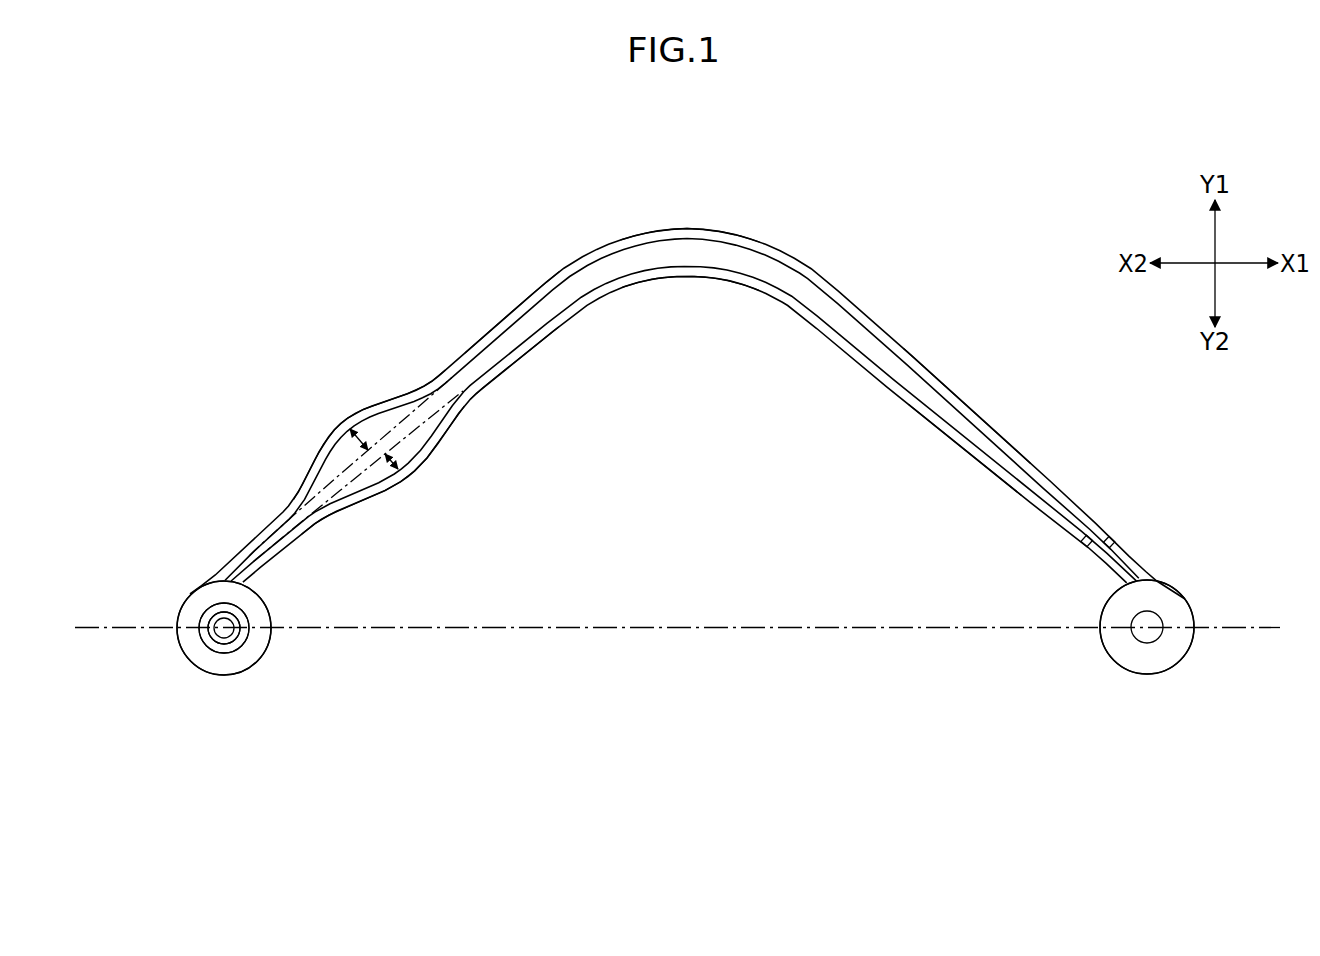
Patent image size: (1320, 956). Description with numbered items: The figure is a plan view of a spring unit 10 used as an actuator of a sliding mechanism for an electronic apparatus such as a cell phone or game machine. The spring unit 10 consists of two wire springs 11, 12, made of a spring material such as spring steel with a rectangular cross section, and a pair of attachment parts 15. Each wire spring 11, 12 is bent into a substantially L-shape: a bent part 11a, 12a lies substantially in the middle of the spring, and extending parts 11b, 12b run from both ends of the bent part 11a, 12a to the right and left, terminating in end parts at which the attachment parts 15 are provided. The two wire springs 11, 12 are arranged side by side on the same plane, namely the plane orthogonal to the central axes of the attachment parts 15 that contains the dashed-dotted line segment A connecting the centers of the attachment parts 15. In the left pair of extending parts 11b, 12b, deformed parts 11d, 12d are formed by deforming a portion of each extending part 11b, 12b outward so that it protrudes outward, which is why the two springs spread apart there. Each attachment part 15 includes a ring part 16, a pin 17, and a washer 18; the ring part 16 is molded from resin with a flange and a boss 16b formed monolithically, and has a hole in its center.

The spring unit 10 is at (964, 141).
The wire spring 11 is at (866, 314).
The bent part 11a is at (687, 228).
The extending part 11b is at (513, 309).
The deformed part 11d is at (330, 435).
The wire spring 12 is at (833, 343).
The bent part 12a is at (686, 278).
The extending part 12b is at (541, 342).
The deformed part 12d is at (426, 458).
The attachment part 15 is at (189, 664).
The ring part 16 is at (1182, 615).
The boss 16b is at (200, 627).
The pin 17 is at (219, 619).
The washer 18 is at (246, 667).
The line segment A is at (898, 632).